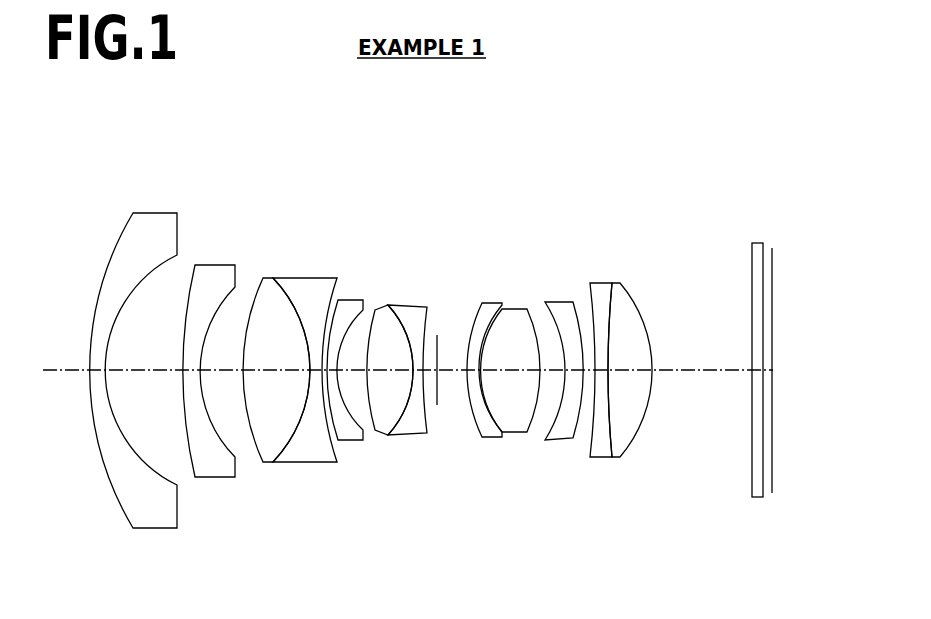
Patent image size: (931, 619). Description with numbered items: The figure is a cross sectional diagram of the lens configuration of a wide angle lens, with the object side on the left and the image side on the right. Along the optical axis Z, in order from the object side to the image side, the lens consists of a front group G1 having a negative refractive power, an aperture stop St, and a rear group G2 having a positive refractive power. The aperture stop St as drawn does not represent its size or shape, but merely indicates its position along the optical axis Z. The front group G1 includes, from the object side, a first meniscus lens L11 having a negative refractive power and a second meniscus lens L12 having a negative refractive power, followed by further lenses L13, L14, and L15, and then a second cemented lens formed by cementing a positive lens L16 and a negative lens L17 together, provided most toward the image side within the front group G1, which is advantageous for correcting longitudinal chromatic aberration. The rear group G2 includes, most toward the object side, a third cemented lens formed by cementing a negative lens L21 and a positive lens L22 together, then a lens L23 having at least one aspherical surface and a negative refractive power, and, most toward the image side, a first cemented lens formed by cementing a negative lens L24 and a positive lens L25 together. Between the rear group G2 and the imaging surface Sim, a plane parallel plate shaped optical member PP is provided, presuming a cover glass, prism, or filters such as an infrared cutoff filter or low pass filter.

The optical axis Z is at (55, 368).
The front group G1 is at (375, 112).
The rear group G2 is at (623, 172).
The first meniscus lens L11 is at (153, 220).
The second meniscus lens L12 is at (210, 270).
The lens L13 is at (262, 280).
The lens L14 is at (307, 287).
The lens L15 is at (348, 302).
The positive lens L16 is at (380, 310).
The negative lens L17 is at (412, 307).
The negative lens L21 is at (487, 305).
The positive lens L22 is at (515, 307).
The lens having at least one aspherical surface L23 is at (560, 305).
The negative lens L24 is at (600, 285).
The positive lens L25 is at (620, 285).
The aperture stop St is at (437, 405).
The optical member PP is at (757, 497).
The imaging surface Sim is at (776, 487).